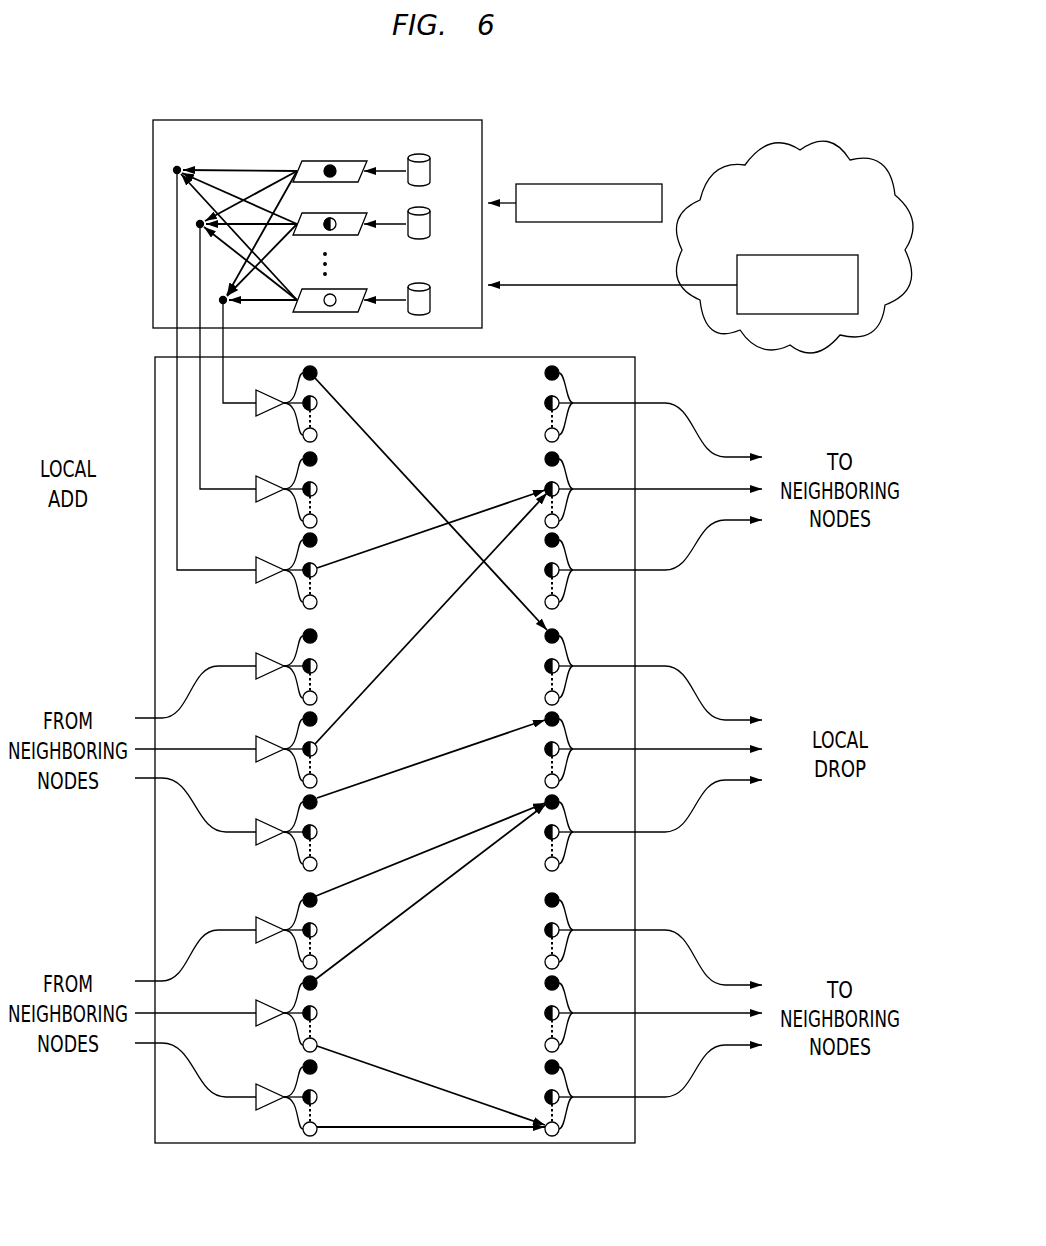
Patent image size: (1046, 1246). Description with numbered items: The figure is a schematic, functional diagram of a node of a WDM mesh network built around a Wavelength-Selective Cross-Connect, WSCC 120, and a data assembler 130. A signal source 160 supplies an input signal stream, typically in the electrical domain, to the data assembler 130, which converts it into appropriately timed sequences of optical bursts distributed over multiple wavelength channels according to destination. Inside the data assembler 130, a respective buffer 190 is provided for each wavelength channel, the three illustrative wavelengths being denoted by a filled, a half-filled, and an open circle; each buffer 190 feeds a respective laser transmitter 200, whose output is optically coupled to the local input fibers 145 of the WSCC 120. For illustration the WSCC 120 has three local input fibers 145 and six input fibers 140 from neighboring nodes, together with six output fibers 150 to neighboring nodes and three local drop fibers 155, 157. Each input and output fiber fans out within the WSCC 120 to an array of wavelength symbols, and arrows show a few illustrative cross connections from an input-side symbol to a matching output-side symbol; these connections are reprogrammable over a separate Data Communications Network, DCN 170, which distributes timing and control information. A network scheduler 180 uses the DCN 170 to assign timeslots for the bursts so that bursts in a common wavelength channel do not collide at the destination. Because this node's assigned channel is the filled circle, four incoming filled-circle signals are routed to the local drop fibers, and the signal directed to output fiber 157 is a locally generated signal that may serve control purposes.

The Wavelength-Selective Cross-Connect (WSCC) 120 is at (153, 547).
The data assembler 130 is at (314, 121).
The input fibers from neighboring nodes 140 is at (198, 680).
The local input fibers 145 is at (252, 404).
The output fibers to neighboring nodes 150 is at (706, 433).
The local drop fibers 155 is at (672, 750).
The local drop output fiber 157 is at (706, 698).
The signal source 160 is at (643, 184).
The Data Communications Network (DCN) 170 is at (805, 346).
The network scheduler 180 is at (858, 315).
The buffer 190 is at (428, 158).
The laser transmitter 200 is at (355, 161).